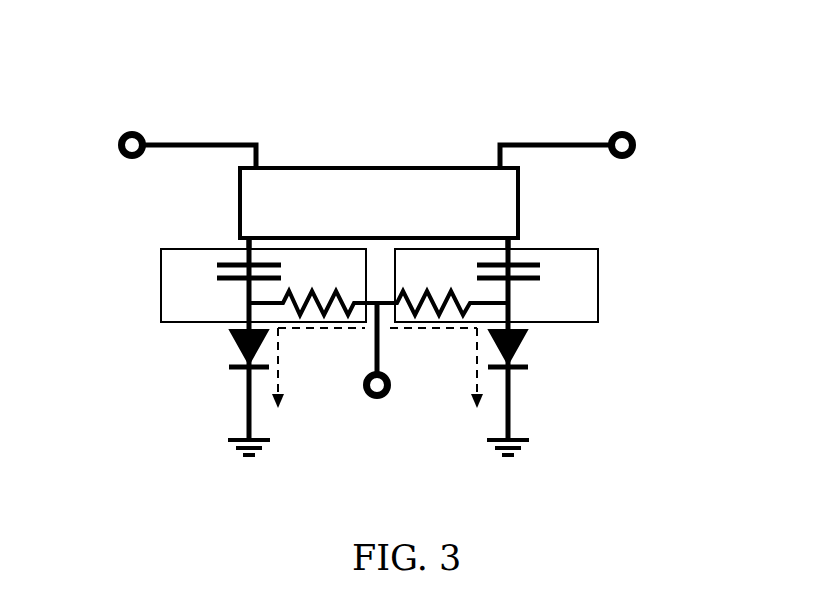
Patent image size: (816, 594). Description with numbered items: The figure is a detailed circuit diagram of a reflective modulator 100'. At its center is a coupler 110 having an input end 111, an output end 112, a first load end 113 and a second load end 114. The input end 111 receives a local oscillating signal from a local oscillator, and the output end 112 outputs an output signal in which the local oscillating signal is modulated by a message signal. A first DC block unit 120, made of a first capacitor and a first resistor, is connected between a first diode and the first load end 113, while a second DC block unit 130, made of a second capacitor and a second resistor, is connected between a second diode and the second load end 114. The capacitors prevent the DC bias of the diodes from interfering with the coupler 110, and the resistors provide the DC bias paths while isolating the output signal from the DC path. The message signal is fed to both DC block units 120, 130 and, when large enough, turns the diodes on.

The reflective modulator 100' is at (382, 232).
The coupler 110 is at (384, 165).
The input end 111 is at (262, 166).
The output end 112 is at (506, 164).
The first load end 113 is at (250, 243).
The second load end 114 is at (515, 243).
The first DC block unit 120 is at (158, 299).
The second DC block unit 130 is at (600, 298).